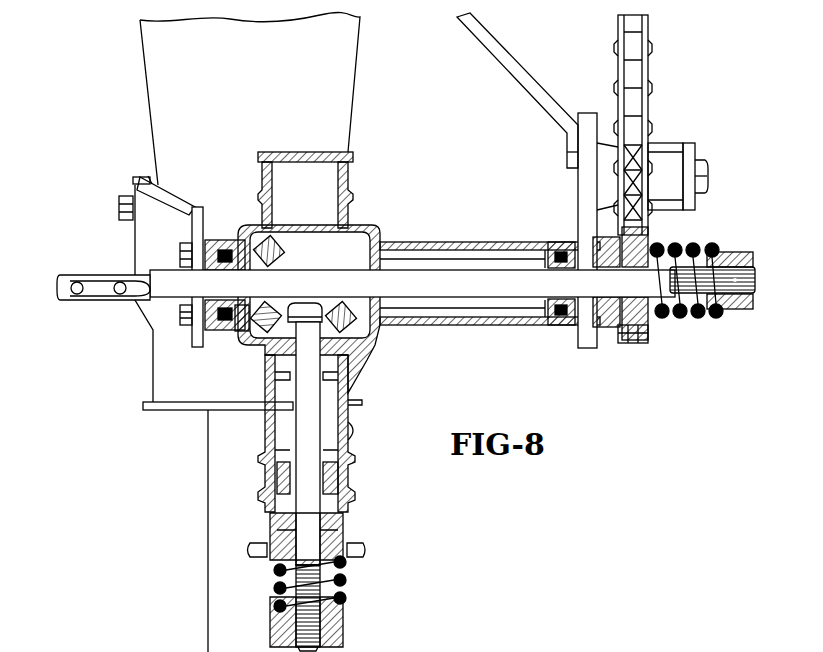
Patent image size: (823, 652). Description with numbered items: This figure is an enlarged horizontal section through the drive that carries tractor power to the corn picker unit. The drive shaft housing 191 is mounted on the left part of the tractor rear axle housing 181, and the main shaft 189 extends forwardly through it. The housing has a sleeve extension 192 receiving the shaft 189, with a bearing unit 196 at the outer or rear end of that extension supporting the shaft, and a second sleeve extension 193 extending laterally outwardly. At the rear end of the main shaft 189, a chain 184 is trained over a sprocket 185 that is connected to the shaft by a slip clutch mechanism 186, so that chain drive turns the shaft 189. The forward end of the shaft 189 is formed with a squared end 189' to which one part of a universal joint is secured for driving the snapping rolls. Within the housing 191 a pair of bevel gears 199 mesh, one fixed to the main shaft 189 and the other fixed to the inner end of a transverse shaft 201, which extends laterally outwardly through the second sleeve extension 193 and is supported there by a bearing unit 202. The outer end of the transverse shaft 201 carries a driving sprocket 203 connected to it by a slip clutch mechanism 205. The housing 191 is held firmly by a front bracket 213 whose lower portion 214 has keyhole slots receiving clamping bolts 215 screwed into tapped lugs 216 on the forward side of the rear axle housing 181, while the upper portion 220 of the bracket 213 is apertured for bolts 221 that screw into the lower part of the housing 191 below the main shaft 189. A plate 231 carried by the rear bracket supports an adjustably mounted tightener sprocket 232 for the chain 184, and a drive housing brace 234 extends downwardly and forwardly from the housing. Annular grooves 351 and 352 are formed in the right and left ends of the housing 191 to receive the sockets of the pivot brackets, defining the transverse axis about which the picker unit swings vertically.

The rear axle housing 181 is at (152, 66).
The chain 184 is at (648, 72).
The sprocket 185 is at (632, 345).
The slip clutch mechanism 186 is at (678, 325).
The main shaft 189 is at (452, 313).
The squared end 189' is at (103, 269).
The drive shaft housing 191 is at (404, 242).
The sleeve extension 192 is at (236, 240).
The second sleeve extension 193 is at (266, 428).
The bearing unit 196 is at (562, 240).
The bevel gears 199 is at (246, 332).
The transverse shaft 201 is at (322, 392).
The bearing unit 202 is at (348, 470).
The driving sprocket 203 is at (365, 548).
The slip clutch mechanism 205 is at (352, 586).
The front bracket 213 is at (174, 207).
The lower portion 214 is at (133, 181).
The clamping bolts 215 is at (119, 209).
The tapped lugs 216 is at (152, 178).
The upper portion 220 is at (197, 327).
The bolts 221 is at (181, 258).
The plate 231 is at (600, 123).
The tightener sprocket 232 is at (650, 160).
The drive housing brace 234 is at (540, 100).
The annular groove 351 is at (354, 164).
The annular groove 352 is at (266, 470).